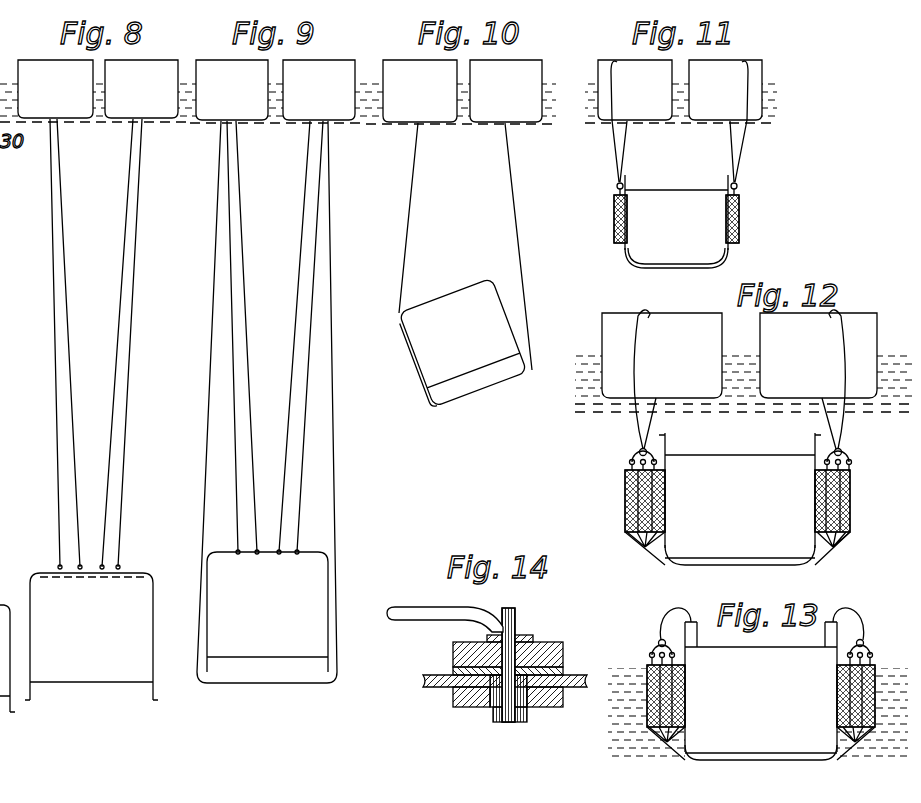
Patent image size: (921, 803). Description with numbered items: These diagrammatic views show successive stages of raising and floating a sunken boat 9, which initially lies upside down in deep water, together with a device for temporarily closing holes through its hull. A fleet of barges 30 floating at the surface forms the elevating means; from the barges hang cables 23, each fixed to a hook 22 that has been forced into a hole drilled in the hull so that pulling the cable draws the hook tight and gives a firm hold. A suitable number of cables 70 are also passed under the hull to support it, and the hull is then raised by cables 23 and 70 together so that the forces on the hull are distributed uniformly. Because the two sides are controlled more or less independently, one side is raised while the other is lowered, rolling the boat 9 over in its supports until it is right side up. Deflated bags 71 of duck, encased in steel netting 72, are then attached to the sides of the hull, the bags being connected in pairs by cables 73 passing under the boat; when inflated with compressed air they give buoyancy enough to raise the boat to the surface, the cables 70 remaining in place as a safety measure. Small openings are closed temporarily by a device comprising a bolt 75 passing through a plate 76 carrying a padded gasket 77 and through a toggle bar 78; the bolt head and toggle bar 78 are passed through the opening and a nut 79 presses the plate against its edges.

In FIG. 8, the boat 9 is at (91, 636).
In FIG. 9, the boat 9 is at (267, 612).
In FIG. 10, the boat 9 is at (461, 342).
In FIG. 11, the boat 9 is at (676, 212).
In FIG. 12, the boat 9 is at (740, 490).
In FIG. 13, the boat 9 is at (761, 687).
In FIG. 14, the boat 9 is at (440, 688).
In FIG. 8, the hook 22 is at (121, 566).
In FIG. 9, the hook 22 is at (236, 546).
In FIG. 8, the cable 23 is at (122, 521).
In FIG. 9, the cable 23 is at (235, 425).
In FIG. 8, the barges 30 is at (112, 121).
In FIG. 9, the barges 30 is at (290, 122).
In FIG. 10, the barges 30 is at (476, 124).
In FIG. 11, the barges 30 is at (690, 124).
In FIG. 12, the barges 30 is at (764, 390).
In FIG. 9, the cables 70 is at (206, 456).
In FIG. 10, the cables 70 is at (404, 239).
In FIG. 11, the deflated bags 71 is at (614, 236).
In FIG. 12, the deflated bags 71 is at (625, 516).
In FIG. 13, the deflated bags 71 is at (686, 704).
In FIG. 11, the steel netting 72 is at (614, 211).
In FIG. 12, the steel netting 72 is at (625, 491).
In FIG. 13, the steel netting 72 is at (686, 681).
In FIG. 11, the cables 73 is at (682, 268).
In FIG. 12, the cables 73 is at (703, 566).
In FIG. 13, the cables 73 is at (750, 761).
In FIG. 14, the bolt 75 is at (517, 642).
In FIG. 14, the plate 76 is at (453, 649).
In FIG. 14, the padded gasket 77 is at (453, 671).
In FIG. 14, the toggle bar 78 is at (552, 707).
In FIG. 14, the nut 79 is at (402, 608).